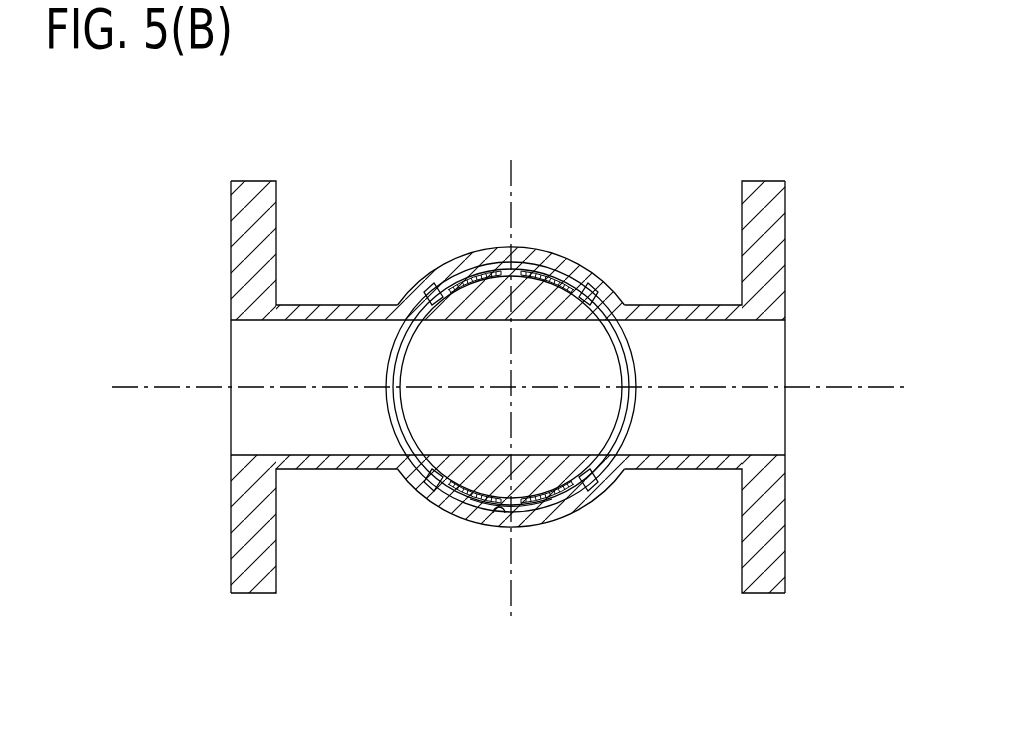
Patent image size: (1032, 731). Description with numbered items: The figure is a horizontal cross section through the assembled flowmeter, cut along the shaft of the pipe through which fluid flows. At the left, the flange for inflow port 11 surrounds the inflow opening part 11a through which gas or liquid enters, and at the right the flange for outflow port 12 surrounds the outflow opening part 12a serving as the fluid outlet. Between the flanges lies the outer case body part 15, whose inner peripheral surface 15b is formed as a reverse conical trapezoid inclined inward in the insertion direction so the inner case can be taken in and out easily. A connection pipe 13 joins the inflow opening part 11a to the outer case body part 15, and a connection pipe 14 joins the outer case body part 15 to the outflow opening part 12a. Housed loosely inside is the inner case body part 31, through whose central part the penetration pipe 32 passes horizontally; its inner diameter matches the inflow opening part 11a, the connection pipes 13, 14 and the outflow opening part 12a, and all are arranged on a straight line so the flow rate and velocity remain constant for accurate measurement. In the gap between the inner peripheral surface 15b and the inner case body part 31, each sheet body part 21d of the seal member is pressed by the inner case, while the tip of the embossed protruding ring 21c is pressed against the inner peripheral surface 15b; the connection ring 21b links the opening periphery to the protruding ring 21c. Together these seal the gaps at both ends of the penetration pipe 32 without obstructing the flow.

The flange for inflow port 11 is at (232, 236).
The inflow opening part 11a is at (256, 455).
The flange for outflow port 12 is at (786, 236).
The outflow opening part 12a is at (766, 455).
The connection pipe 13 is at (310, 470).
The connection pipe 14 is at (712, 470).
The outer case body part 15 is at (530, 525).
The inner peripheral surface 15b is at (507, 510).
The connection ring 21b is at (426, 291).
The protruding ring 21c is at (433, 283).
The sheet body part 21d is at (467, 272).
The inner case body part 31 is at (515, 272).
The penetration pipe 32 is at (548, 322).